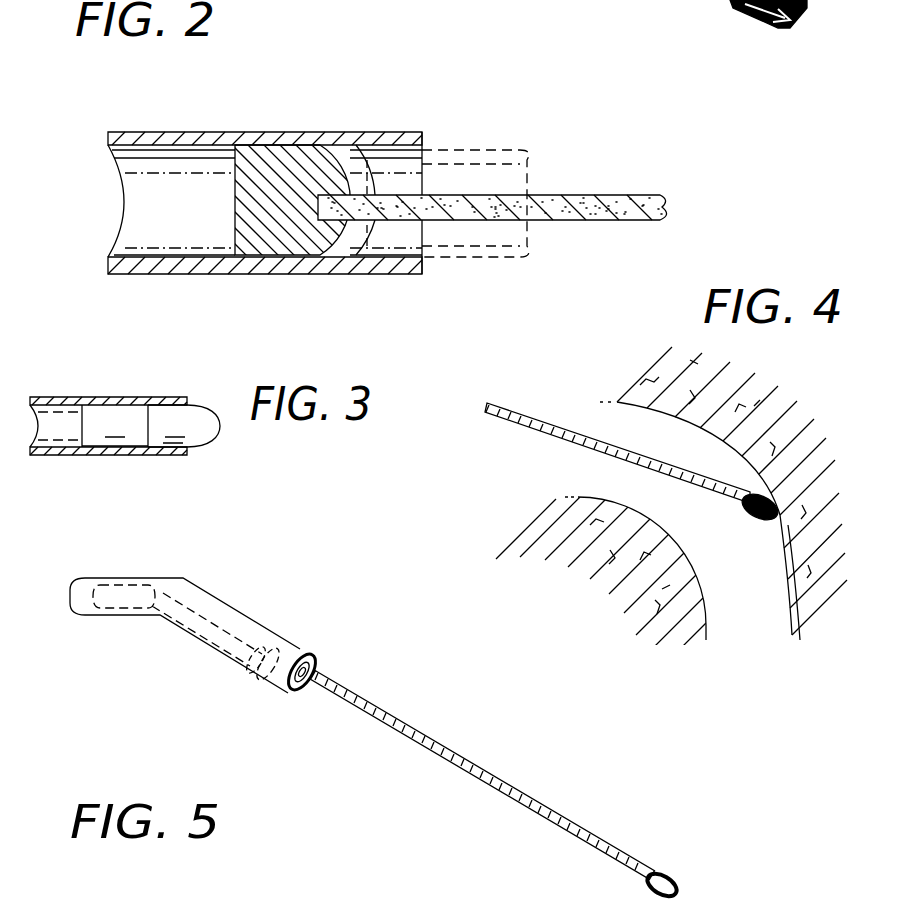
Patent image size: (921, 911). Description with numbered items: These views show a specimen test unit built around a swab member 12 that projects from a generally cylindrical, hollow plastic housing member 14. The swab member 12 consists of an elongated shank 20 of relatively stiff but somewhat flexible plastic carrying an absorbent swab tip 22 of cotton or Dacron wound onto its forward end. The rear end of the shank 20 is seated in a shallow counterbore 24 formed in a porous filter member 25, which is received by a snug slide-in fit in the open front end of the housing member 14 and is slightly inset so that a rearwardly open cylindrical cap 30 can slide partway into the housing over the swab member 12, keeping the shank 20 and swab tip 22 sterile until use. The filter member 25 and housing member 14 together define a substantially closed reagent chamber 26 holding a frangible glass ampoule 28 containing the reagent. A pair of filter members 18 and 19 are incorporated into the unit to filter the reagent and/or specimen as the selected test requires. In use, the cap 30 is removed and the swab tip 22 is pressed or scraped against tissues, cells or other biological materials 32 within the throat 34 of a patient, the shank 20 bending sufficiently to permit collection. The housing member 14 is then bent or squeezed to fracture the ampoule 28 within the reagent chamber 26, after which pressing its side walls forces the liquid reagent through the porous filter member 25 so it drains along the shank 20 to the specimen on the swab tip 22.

In FIG. 2, the swab member 12 is at (526, 166).
In FIG. 4, the swab member 12 is at (633, 448).
In FIG. 5, the swab member 12 is at (500, 772).
In FIG. 2, the housing member 14 is at (132, 136).
In FIG. 5, the housing member 14 is at (270, 627).
In FIG. 3, the filter member 18 is at (116, 411).
In FIG. 3, the filter member 19 is at (175, 411).
In FIG. 2, the shank 20 is at (592, 194).
In FIG. 4, the shank 20 is at (622, 458).
In FIG. 5, the shank 20 is at (548, 812).
In FIG. 4, the swab tip 22 is at (750, 513).
In FIG. 5, the swab tip 22 is at (668, 877).
In FIG. 2, the counterbore 24 is at (375, 147).
In FIG. 2, the filter member 25 is at (270, 153).
In FIG. 5, the filter member 25 is at (258, 672).
In FIG. 2, the reagent chamber 26 is at (148, 223).
In FIG. 5, the ampoule 28 is at (217, 652).
In FIG. 2, the cap 30 is at (496, 150).
In FIG. 3, the cap 30 is at (88, 456).
In FIG. 4, the biological materials 32 is at (790, 606).
In FIG. 4, the throat 34 is at (634, 385).